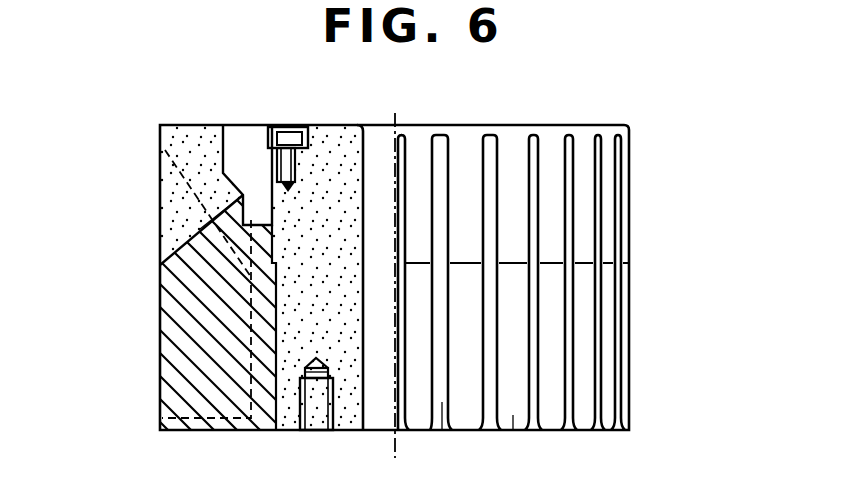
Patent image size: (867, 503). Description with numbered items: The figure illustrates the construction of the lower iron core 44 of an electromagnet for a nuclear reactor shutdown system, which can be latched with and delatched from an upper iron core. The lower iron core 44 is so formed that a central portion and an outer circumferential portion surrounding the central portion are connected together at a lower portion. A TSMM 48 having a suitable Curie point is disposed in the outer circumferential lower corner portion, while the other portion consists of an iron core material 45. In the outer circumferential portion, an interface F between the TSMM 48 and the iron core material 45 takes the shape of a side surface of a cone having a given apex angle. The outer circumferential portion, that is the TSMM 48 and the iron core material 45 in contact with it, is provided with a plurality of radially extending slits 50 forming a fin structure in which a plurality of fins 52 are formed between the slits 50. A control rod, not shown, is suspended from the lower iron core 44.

The lower iron core 44 is at (642, 155).
The iron core material 45 is at (172, 183).
The TSMM 48 is at (218, 403).
The slits 50 is at (162, 150).
The fins 52 is at (513, 415).
The interface F is at (200, 229).